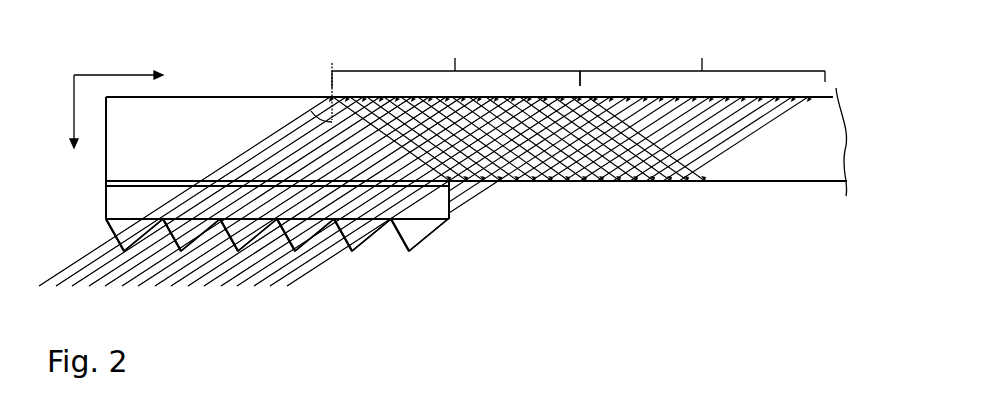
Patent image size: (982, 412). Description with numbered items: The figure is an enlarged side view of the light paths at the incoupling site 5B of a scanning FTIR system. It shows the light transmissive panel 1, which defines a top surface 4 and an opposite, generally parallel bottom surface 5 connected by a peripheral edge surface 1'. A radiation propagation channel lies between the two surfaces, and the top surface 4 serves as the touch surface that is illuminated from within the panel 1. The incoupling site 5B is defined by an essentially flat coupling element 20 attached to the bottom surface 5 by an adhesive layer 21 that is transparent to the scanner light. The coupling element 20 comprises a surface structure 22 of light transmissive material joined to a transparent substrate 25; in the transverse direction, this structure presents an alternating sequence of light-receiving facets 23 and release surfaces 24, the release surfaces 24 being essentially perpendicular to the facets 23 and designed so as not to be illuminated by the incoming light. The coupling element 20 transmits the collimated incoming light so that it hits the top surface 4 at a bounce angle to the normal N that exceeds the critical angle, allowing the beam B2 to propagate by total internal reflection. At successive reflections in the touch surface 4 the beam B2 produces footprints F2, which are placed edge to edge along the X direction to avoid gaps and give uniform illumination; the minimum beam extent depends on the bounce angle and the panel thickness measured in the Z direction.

The light transmissive panel 1 is at (476, 115).
The top surface 4 is at (218, 97).
The peripheral edge surface 1' is at (80, 158).
The bottom surface 5 is at (608, 183).
The incoupling site 5B is at (222, 265).
The coupling element 20 is at (451, 205).
The adhesive layer 21 is at (128, 183).
The transparent substrate 25 is at (122, 203).
The surface structure 22 is at (463, 220).
The light-receiving facets 23 is at (330, 248).
The release surfaces 24 is at (383, 250).
The normal N is at (331, 96).
The footprint F2 is at (578, 59).
The beam B2 is at (678, 130).
The x direction X is at (118, 65).
The z direction Z is at (65, 111).